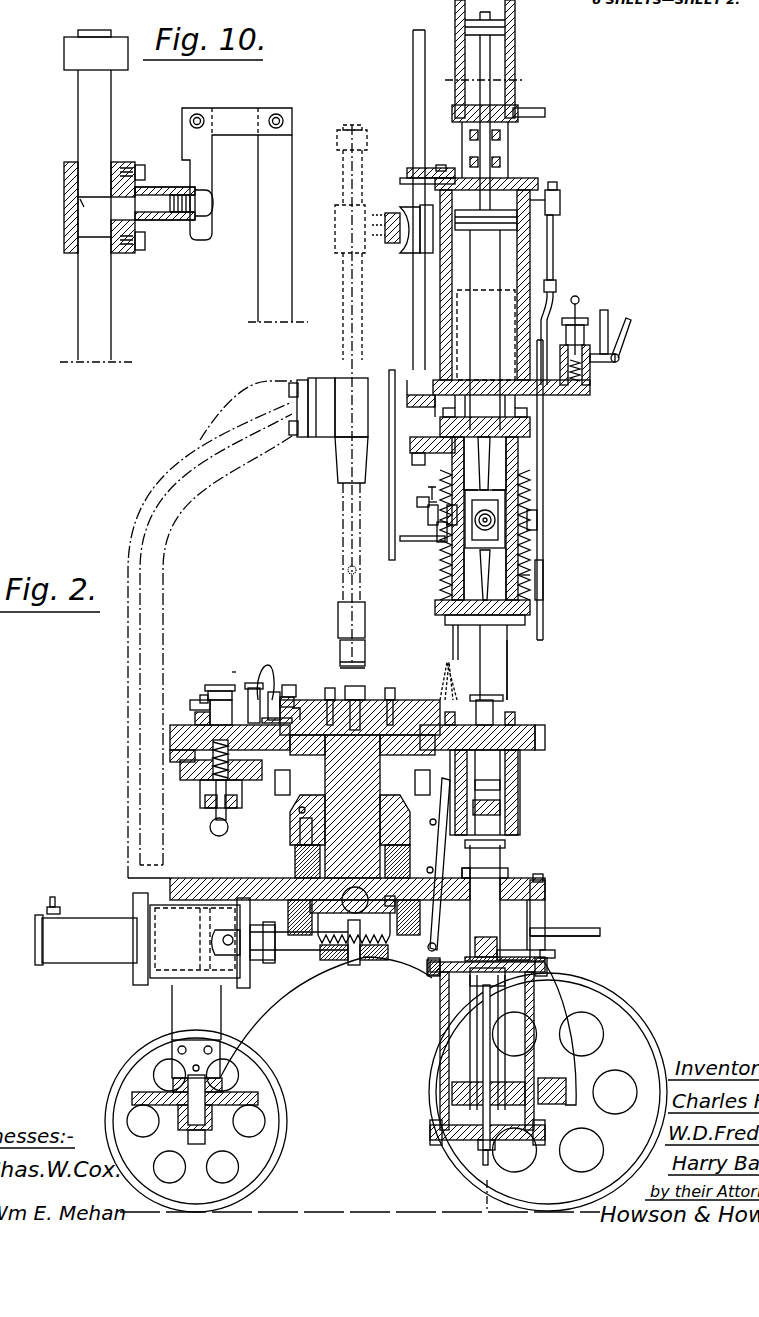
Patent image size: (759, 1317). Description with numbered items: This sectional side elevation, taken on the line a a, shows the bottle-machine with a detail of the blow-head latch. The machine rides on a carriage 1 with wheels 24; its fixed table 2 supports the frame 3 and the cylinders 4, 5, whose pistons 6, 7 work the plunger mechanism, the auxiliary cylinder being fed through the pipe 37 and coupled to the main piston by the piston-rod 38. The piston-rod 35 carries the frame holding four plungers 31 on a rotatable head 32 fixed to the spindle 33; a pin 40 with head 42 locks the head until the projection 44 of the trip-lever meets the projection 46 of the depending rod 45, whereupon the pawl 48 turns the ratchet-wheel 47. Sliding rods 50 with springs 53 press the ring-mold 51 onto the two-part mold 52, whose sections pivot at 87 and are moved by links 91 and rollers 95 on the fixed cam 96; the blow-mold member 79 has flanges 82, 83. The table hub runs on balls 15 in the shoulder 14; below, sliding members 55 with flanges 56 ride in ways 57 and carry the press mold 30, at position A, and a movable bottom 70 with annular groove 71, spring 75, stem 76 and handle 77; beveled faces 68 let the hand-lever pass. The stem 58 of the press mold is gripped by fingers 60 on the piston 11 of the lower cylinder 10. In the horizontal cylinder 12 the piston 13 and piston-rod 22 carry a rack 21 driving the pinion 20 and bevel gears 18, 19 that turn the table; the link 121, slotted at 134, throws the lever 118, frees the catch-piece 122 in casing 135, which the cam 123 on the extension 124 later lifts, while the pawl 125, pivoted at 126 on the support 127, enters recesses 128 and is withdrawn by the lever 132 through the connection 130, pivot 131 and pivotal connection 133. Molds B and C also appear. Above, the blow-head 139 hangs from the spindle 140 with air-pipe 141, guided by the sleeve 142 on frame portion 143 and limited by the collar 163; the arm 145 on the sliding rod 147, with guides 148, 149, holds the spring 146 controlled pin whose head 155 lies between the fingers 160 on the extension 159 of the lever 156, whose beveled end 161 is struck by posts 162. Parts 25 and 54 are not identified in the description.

In FIG. 2, the carriage 1 is at (326, 1017).
In FIG. 2, the fixed platform or table 2 is at (357, 882).
In FIG. 2, the frame 3 is at (204, 452).
In FIG. 2, the main cylinder 4 is at (486, 279).
In FIG. 2, the auxiliary cylinder 5 is at (490, 122).
In FIG. 2, the piston 6 is at (468, 232).
In FIG. 2, the piston 7 is at (485, 59).
In FIG. 2, the lower cylinder 10 is at (487, 1051).
In FIG. 2, the piston 11 is at (464, 1090).
In FIG. 2, the horizontal cylinder 12 is at (142, 940).
In FIG. 2, the piston 13 is at (203, 962).
In FIG. 2, the shoulder 14 is at (300, 822).
In FIG. 2, the balls 15 is at (298, 808).
In FIG. 2, the bevel gear-wheel 18 is at (372, 962).
In FIG. 2, the bevel gear-wheel 19 is at (303, 858).
In FIG. 2, the pinion 20 is at (352, 915).
In FIG. 2, the rack 21 is at (416, 917).
In FIG. 2, the piston-rod 22 is at (299, 931).
In FIG. 2, the wheels 24 is at (386, 1092).
In FIG. 2, the axle bracket 25 is at (215, 1128).
In FIG. 2, the blank or press mold 30 is at (500, 712).
In FIG. 2, the plungers 31 is at (488, 468).
In FIG. 2, the rotatable head or hub 32 is at (485, 519).
In FIG. 2, the spindle 33 is at (533, 520).
In FIG. 2, the piston-rod 35 is at (485, 522).
In FIG. 2, the pipe 37 is at (526, 112).
In FIG. 2, the piston-rod 38 is at (494, 150).
In FIG. 2, the locking-pin 40 is at (428, 489).
In FIG. 2, the head 42 is at (420, 503).
In FIG. 2, the projection 44 is at (430, 541).
In FIG. 2, the depending rod 45 is at (428, 515).
In FIG. 2, the projection 46 is at (394, 556).
In FIG. 2, the ratchet-wheel 47 is at (545, 505).
In FIG. 2, the pawl 48 is at (545, 558).
In FIG. 2, the sliding rods 50 is at (452, 466).
In FIG. 2, the ring-mold 51 is at (496, 662).
In FIG. 2, the two-part mold structure 52 is at (203, 694).
In FIG. 2, the springs 53 is at (450, 553).
In FIG. 2, the bracket 54 is at (455, 515).
In FIG. 2, the sliding members 55 is at (197, 780).
In FIG. 2, the flanges 56 is at (560, 203).
In FIG. 2, the ways 57 is at (170, 740).
In FIG. 2, the stem 58 is at (485, 792).
In FIG. 2, the fingers 60 is at (496, 844).
In FIG. 2, the beveled faces 68 is at (546, 731).
In FIG. 2, the movable bottom 70 is at (195, 716).
In FIG. 2, the annular groove 71 is at (221, 712).
In FIG. 2, the spring 75 is at (235, 785).
In FIG. 2, the stem 76 is at (237, 808).
In FIG. 2, the handle 77 is at (220, 836).
In FIG. 2, the blow-mold members 79 is at (220, 686).
In FIG. 2, the flange 82 is at (195, 700).
In FIG. 2, the flange 83 is at (273, 716).
In FIG. 2, the pivot 87 is at (253, 683).
In FIG. 2, the link 91 is at (276, 690).
In FIG. 2, the antifriction-rollers 95 is at (330, 688).
In FIG. 2, the fixed cam 96 is at (362, 690).
In FIG. 2, the lever 118 is at (555, 956).
In FIG. 2, the link 121 is at (512, 950).
In FIG. 2, the catch-piece 122 is at (533, 915).
In FIG. 2, the cam 123 is at (548, 928).
In FIG. 2, the extension 124 is at (600, 930).
In FIG. 2, the pawl 125 is at (440, 798).
In FIG. 2, the pivot 126 is at (436, 822).
In FIG. 2, the support 127 is at (447, 848).
In FIG. 2, the recesses 128 is at (353, 782).
In FIG. 2, the connection 130 is at (428, 902).
In FIG. 2, the pivot 131 is at (462, 868).
In FIG. 2, the lever 132 is at (418, 912).
In FIG. 2, the pivotal connection 133 is at (433, 975).
In FIG. 2, the slot 134 is at (475, 948).
In FIG. 2, the casing 135 is at (545, 892).
In FIG. 2, the blow-head 139 is at (366, 628).
In FIG. 10, the spindle 140 is at (118, 322).
In FIG. 2, the spindle 140 is at (343, 515).
In FIG. 10, the pipe 141 is at (152, 194).
In FIG. 2, the pipe 141 is at (348, 570).
In FIG. 2, the sleeve 142 is at (351, 430).
In FIG. 2, the portion of the upper frame 143 is at (322, 388).
In FIG. 10, the arm 145 is at (122, 162).
In FIG. 2, the arm 145 is at (390, 204).
In FIG. 10, the spring 146 is at (171, 222).
In FIG. 2, the vertically-sliding rod 147 is at (413, 290).
In FIG. 2, the guide 148 is at (415, 168).
In FIG. 2, the guide 149 is at (410, 450).
In FIG. 10, the head 155 is at (213, 210).
In FIG. 2, the lever 156 is at (452, 633).
In FIG. 10, the upper extension 159 is at (278, 228).
In FIG. 10, the fingers 160 is at (206, 172).
In FIG. 2, the beveled end 161 is at (446, 655).
In FIG. 2, the posts 162 is at (272, 665).
In FIG. 2, the adjustable collar 163 is at (376, 370).
In FIG. 2, the mold position A is at (501, 670).
In FIG. 2, the mold position B is at (360, 789).
In FIG. 2, the mold position C is at (229, 675).
In FIG. 2, the section line a is at (440, 8).